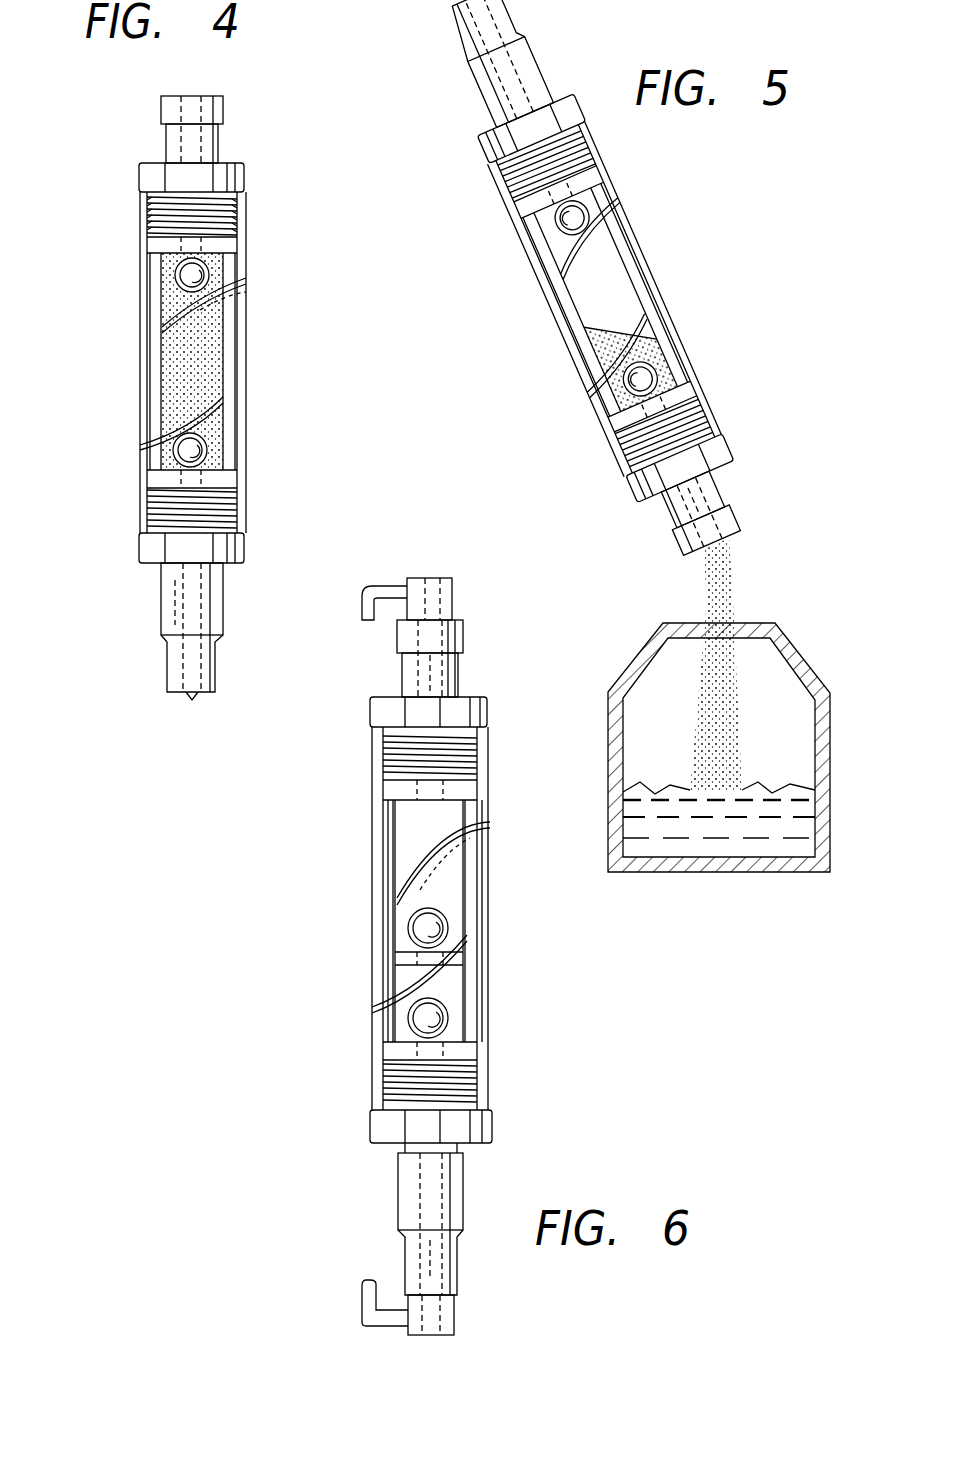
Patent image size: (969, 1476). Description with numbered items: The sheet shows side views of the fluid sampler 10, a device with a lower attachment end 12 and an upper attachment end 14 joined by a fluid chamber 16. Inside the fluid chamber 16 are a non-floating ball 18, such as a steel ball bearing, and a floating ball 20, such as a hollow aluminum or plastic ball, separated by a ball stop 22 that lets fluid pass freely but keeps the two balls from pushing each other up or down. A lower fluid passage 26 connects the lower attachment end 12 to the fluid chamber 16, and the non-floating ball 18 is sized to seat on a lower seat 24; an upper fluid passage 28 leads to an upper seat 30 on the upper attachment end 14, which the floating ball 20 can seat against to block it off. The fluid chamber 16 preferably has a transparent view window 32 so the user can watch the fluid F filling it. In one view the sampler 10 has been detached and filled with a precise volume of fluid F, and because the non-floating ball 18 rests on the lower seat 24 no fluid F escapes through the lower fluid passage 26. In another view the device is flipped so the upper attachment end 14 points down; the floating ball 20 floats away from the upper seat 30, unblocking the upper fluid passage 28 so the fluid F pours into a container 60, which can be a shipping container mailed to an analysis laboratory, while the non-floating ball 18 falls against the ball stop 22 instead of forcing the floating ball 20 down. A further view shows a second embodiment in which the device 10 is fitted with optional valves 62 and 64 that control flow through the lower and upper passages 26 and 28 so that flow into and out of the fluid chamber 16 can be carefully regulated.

In FIG. 6, the fluid sampler 10 is at (378, 909).
In FIG. 4, the lower attachment end 12 is at (215, 660).
In FIG. 5, the lower attachment end 12 is at (458, 38).
In FIG. 6, the lower attachment end 12 is at (400, 1182).
In FIG. 4, the upper attachment end 14 is at (190, 110).
In FIG. 5, the upper attachment end 14 is at (722, 517).
In FIG. 6, the upper attachment end 14 is at (455, 637).
In FIG. 4, the fluid chamber 16 is at (225, 390).
In FIG. 5, the fluid chamber 16 is at (605, 298).
In FIG. 6, the fluid chamber 16 is at (452, 884).
In FIG. 4, the non-floating ball 18 is at (195, 455).
In FIG. 5, the non-floating ball 18 is at (565, 248).
In FIG. 6, the non-floating ball 18 is at (442, 1020).
In FIG. 4, the floating ball 20 is at (190, 275).
In FIG. 5, the floating ball 20 is at (625, 300).
In FIG. 6, the floating ball 20 is at (418, 928).
In FIG. 4, the ball stop 22 is at (170, 398).
In FIG. 5, the ball stop 22 is at (598, 258).
In FIG. 6, the ball stop 22 is at (398, 960).
In FIG. 4, the lower seat 24 is at (165, 485).
In FIG. 5, the lower seat 24 is at (525, 205).
In FIG. 6, the lower seat 24 is at (465, 1052).
In FIG. 4, the lower fluid passage 26 is at (190, 612).
In FIG. 6, the lower fluid passage 26 is at (430, 1250).
In FIG. 5, the upper fluid passage 28 is at (670, 517).
In FIG. 6, the upper fluid passage 28 is at (440, 672).
In FIG. 4, the upper seat 30 is at (191, 245).
In FIG. 5, the upper seat 30 is at (685, 390).
In FIG. 6, the upper seat 30 is at (462, 790).
In FIG. 6, the transparent view window 32 is at (405, 818).
In FIG. 5, the container 60 is at (645, 665).
In FIG. 6, the valve 62 is at (455, 1322).
In FIG. 6, the valve 64 is at (428, 578).
In FIG. 4, the fluid F is at (205, 348).
In FIG. 5, the fluid F is at (612, 395).